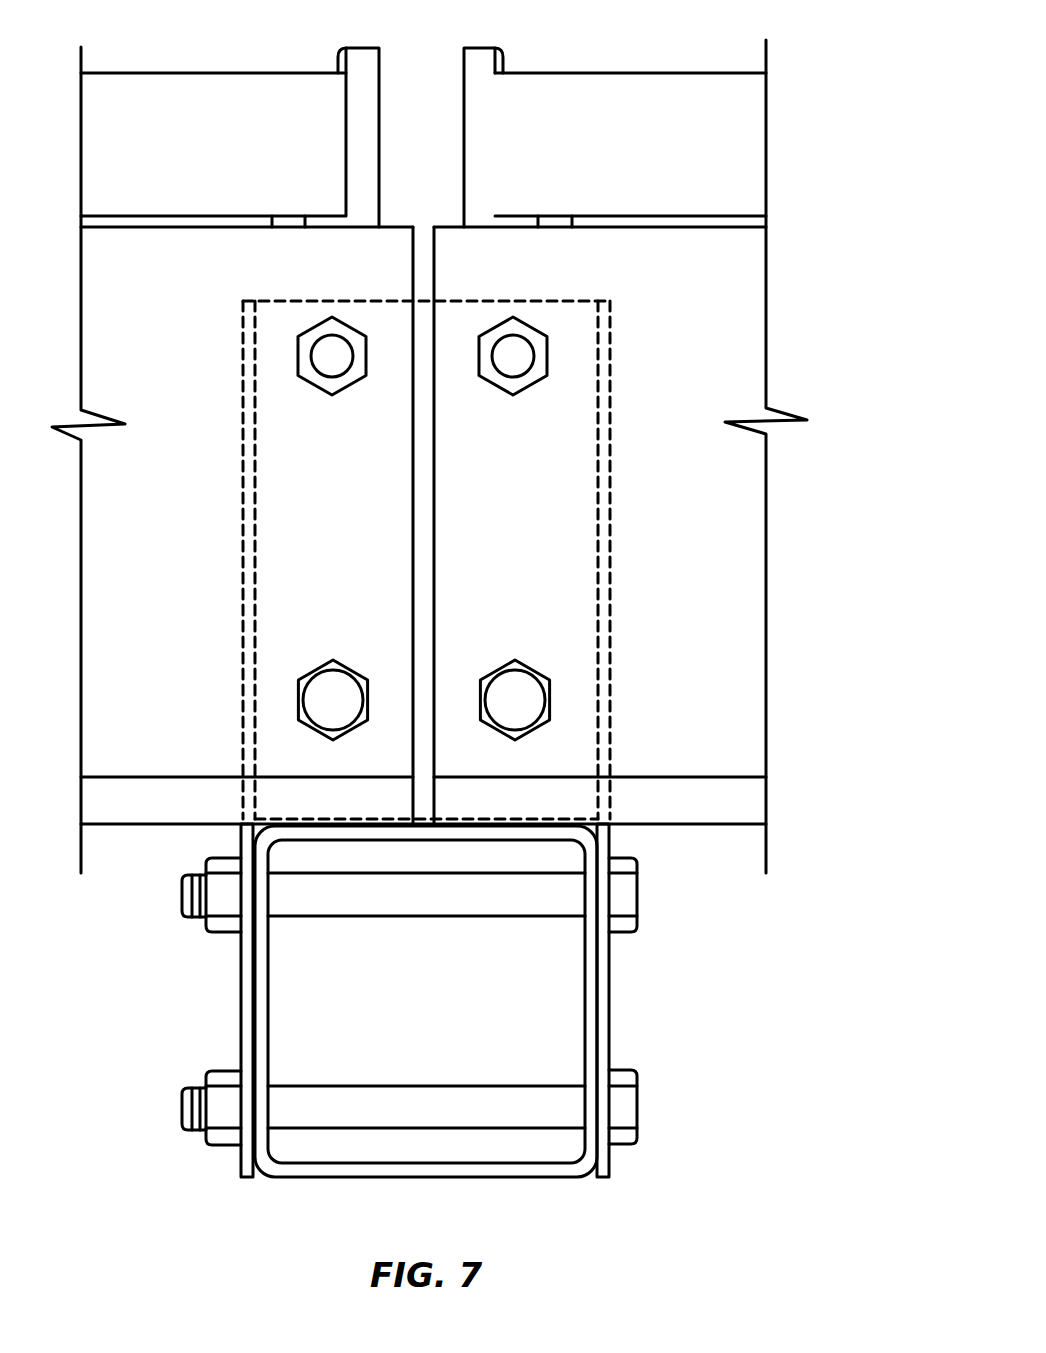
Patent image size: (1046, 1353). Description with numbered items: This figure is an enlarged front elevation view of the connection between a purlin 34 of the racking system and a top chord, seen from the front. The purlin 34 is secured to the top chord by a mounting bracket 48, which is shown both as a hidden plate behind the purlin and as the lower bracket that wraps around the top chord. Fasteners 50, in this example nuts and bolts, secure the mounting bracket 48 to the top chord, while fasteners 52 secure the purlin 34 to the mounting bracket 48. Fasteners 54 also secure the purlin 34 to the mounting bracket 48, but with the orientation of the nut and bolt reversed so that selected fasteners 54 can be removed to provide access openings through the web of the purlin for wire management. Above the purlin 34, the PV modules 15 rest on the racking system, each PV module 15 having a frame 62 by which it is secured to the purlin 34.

The PV module 15 is at (722, 160).
The purlin 34 is at (705, 560).
The mounting bracket 48 is at (607, 680).
The fastener 50 is at (625, 880).
The fastener 52 is at (542, 355).
The fastener 54 is at (522, 664).
The frame 62 is at (487, 47).